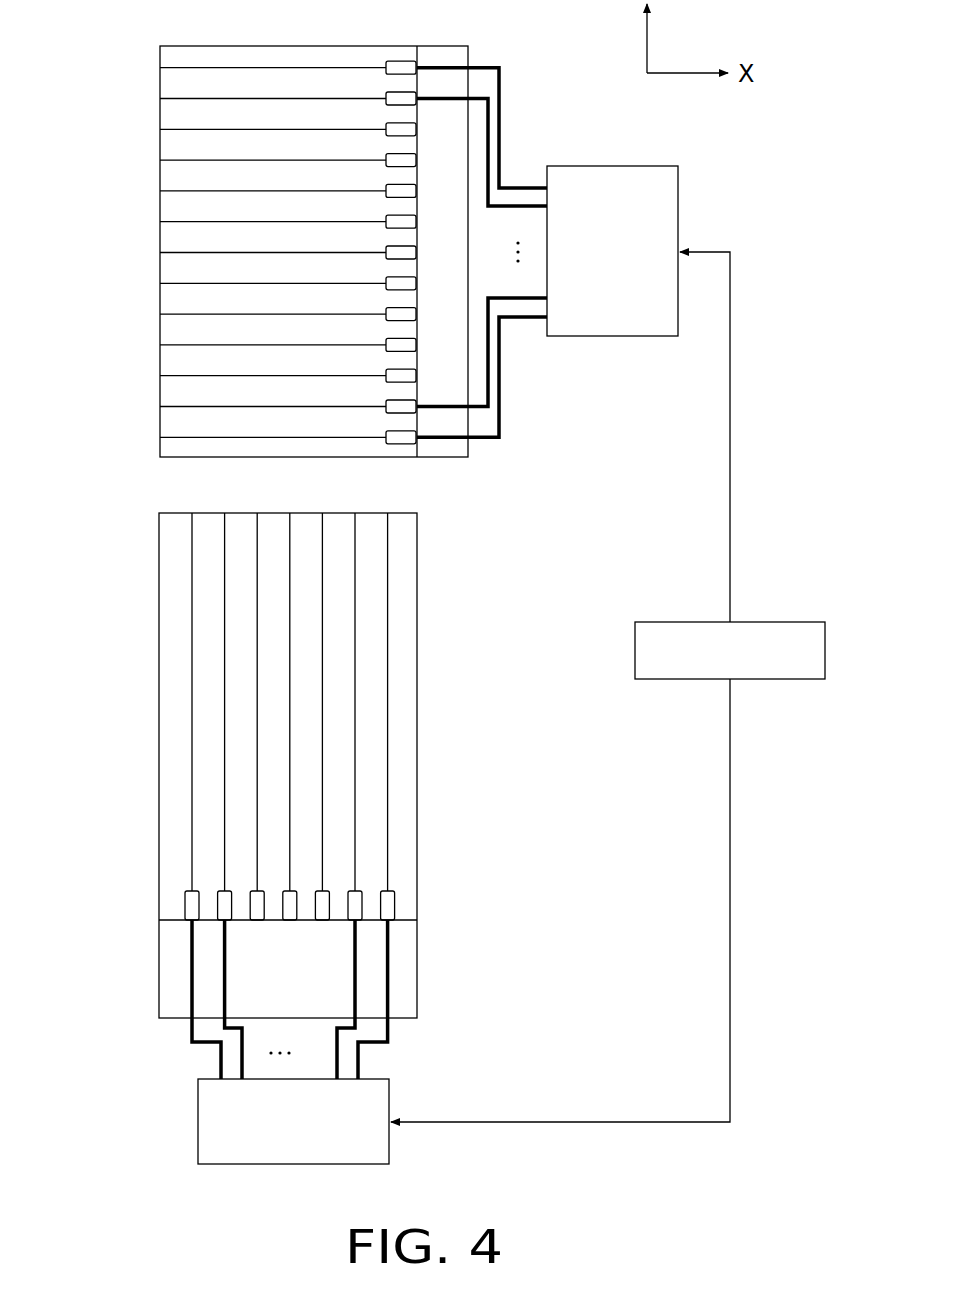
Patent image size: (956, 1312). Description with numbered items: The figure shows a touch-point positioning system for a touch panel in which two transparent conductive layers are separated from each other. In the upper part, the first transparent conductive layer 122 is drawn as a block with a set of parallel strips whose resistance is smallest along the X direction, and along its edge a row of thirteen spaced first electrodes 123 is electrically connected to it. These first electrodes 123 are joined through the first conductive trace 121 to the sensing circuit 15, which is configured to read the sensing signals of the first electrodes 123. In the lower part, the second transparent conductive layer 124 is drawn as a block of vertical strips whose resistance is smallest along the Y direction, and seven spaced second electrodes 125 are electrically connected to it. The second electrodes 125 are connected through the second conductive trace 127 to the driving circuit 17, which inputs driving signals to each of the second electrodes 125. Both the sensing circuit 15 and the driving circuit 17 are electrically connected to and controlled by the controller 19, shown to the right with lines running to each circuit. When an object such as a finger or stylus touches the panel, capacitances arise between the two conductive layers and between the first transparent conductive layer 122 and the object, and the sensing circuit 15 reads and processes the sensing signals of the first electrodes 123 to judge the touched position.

The first conductive trace 121 is at (505, 110).
The first transparent conductive layer 122 is at (175, 176).
The first electrodes 123 is at (398, 62).
The second transparent conductive layer 124 is at (178, 727).
The second electrodes 125 is at (192, 910).
The second conductive trace 127 is at (188, 978).
The sensing circuit 15 is at (585, 166).
The driving circuit 17 is at (198, 1112).
The controller 19 is at (780, 622).